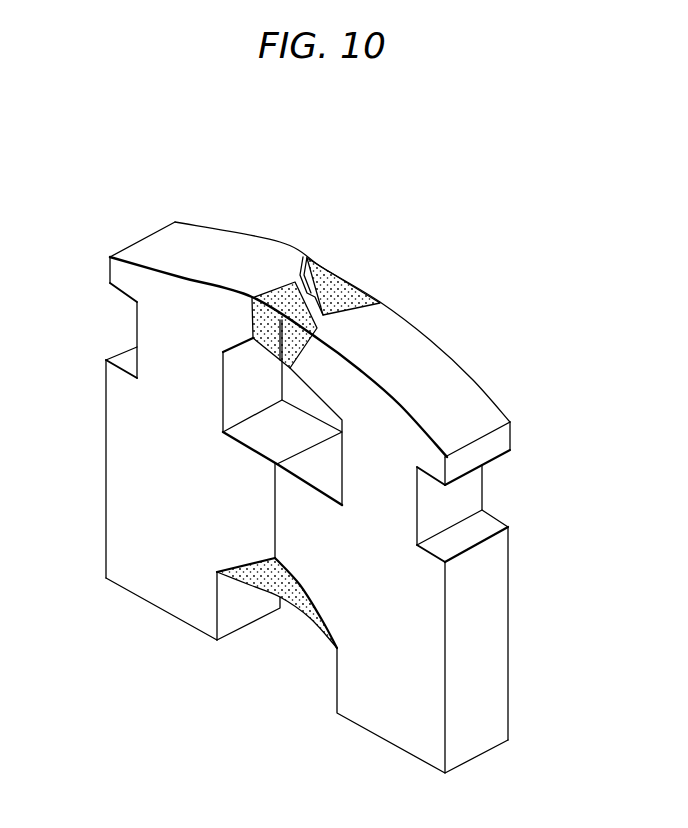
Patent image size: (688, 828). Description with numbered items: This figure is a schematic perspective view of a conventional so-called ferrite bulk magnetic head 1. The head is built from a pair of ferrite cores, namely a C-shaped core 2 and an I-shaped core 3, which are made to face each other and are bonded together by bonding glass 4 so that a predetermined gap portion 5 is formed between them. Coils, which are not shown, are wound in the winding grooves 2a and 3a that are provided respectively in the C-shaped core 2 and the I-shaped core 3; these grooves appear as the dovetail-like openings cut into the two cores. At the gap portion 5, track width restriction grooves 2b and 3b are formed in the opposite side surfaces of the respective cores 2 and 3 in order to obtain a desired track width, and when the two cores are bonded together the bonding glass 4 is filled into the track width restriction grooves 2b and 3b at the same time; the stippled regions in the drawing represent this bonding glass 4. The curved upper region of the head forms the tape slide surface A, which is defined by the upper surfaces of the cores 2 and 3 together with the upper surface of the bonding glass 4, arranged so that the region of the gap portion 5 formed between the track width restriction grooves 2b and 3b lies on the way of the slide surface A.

The magnetic head 1 is at (516, 347).
The tape slide surface A is at (398, 340).
The C-shaped core 2 is at (148, 558).
The winding groove 2a is at (223, 397).
The track width restriction groove 2b is at (272, 297).
The I-shaped core 3 is at (373, 683).
The winding groove 3a is at (342, 456).
The track width restriction groove 3b is at (321, 306).
The bonding glass 4 is at (262, 348).
The gap portion 5 is at (303, 257).